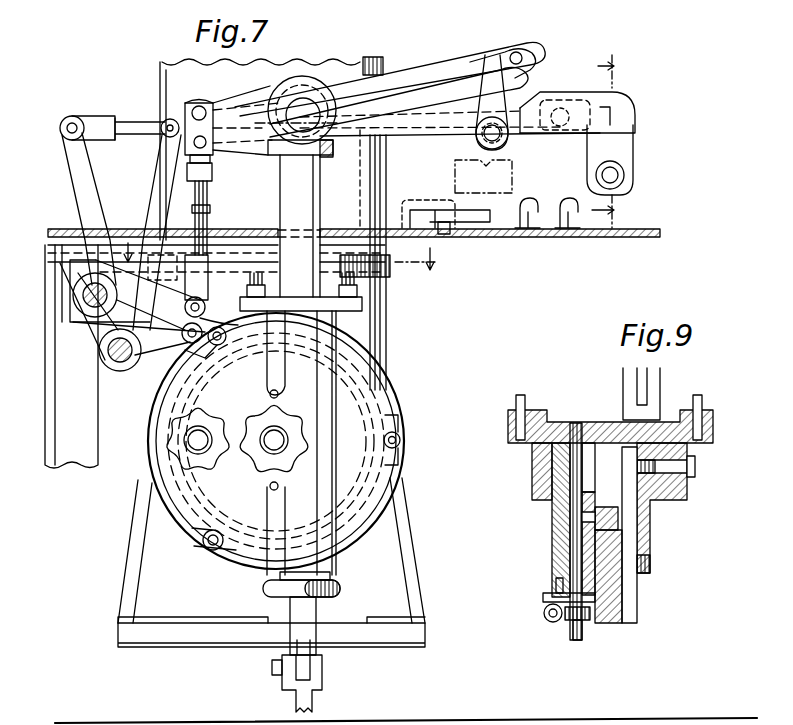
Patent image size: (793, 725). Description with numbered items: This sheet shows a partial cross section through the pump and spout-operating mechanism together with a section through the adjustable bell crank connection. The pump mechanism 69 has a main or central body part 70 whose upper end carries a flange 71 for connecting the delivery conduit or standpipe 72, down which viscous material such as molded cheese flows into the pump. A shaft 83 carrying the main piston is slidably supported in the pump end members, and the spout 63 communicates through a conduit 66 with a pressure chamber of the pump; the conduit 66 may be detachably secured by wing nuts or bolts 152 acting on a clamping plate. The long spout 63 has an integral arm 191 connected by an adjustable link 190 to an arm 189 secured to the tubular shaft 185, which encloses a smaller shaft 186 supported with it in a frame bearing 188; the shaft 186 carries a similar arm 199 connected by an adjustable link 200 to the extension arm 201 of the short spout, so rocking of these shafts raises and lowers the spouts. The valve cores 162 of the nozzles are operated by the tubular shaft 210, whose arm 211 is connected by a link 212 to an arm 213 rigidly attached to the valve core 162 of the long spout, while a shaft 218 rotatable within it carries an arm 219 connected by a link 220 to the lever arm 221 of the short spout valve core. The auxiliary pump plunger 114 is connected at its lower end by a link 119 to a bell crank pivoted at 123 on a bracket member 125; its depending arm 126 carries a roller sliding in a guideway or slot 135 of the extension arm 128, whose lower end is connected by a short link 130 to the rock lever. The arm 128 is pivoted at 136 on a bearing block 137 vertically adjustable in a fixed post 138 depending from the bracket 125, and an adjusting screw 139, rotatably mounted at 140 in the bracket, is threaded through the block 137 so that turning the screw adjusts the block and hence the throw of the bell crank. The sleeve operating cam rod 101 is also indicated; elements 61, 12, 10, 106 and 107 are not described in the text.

In FIG. 7, the delivery conduit or standpipe 72 is at (182, 82).
In FIG. 7, the link 212 is at (148, 122).
In FIG. 7, the arm 211 is at (82, 200).
In FIG. 7, the arm 219 is at (157, 186).
In FIG. 7, the arm 191 is at (240, 92).
In FIG. 7, the extension arm 201 is at (232, 138).
In FIG. 7, the adjustable link 190 is at (204, 205).
In FIG. 7, the adjustable link 200 is at (227, 233).
In FIG. 7, the wing nuts or bolts 152 is at (258, 231).
In FIG. 7, the conduits 66 is at (318, 190).
In FIG. 7, the bar 61 is at (420, 63).
In FIG. 7, the link 220 is at (445, 70).
In FIG. 7, the lever arm 221 is at (512, 85).
In FIG. 7, the spout 63 is at (548, 100).
In FIG. 7, the section line 12 is at (619, 141).
In FIG. 7, the arm 213 is at (632, 150).
In FIG. 7, the valve core 162 is at (626, 170).
In FIG. 7, the section line 10 is at (287, 255).
In FIG. 7, the flange 71 is at (400, 272).
In FIG. 7, the main or central body part 70 is at (386, 330).
In FIG. 7, the pump mechanism 69 is at (404, 380).
In FIG. 7, the shaft 83 is at (285, 437).
In FIG. 7, the bearing 188 is at (70, 276).
In FIG. 7, the shaft 186 is at (82, 293).
In FIG. 7, the tubular shaft 185 is at (80, 305).
In FIG. 7, the shaft 218 is at (108, 350).
In FIG. 7, the tubular shaft 210 is at (108, 360).
In FIG. 7, the arm 199 is at (173, 354).
In FIG. 7, the arm 189 is at (150, 335).
In FIG. 7, the auxiliary pump plunger 114 is at (308, 608).
In FIG. 7, the links 119 is at (316, 703).
In FIG. 9, the rotatable mounting of adjusting screw 140 is at (574, 424).
In FIG. 9, the bracket member 125 is at (612, 422).
In FIG. 9, the adjusting screw 139 is at (535, 472).
In FIG. 9, the pivot 123 is at (695, 467).
In FIG. 9, the pivot 136 is at (605, 515).
In FIG. 9, the bearing block 137 is at (552, 520).
In FIG. 9, the depending arm 126 is at (650, 523).
In FIG. 9, the fixed post 138 is at (556, 553).
In FIG. 9, the short link 130 is at (628, 568).
In FIG. 9, the sleeve operating cam rod 101 is at (543, 598).
In FIG. 9, the guideway or slot 135 is at (632, 614).
In FIG. 9, the pin 106 is at (549, 620).
In FIG. 9, the extension arm 128 is at (606, 625).
In FIG. 9, the nut 107 is at (570, 625).